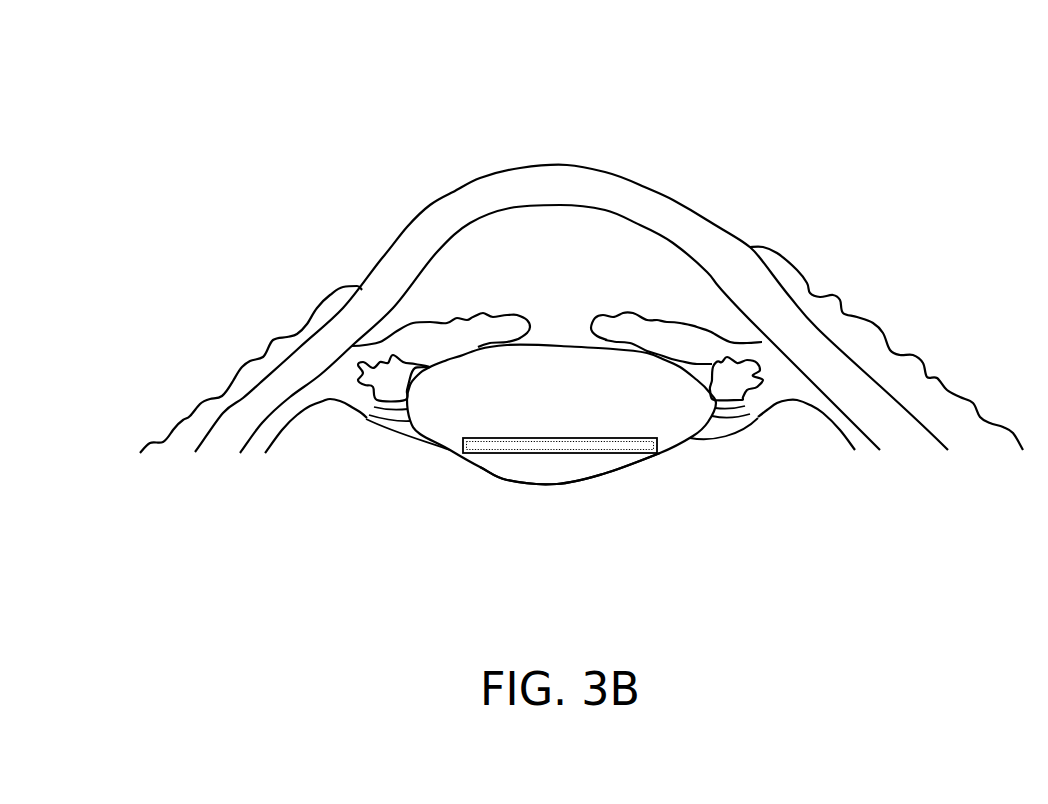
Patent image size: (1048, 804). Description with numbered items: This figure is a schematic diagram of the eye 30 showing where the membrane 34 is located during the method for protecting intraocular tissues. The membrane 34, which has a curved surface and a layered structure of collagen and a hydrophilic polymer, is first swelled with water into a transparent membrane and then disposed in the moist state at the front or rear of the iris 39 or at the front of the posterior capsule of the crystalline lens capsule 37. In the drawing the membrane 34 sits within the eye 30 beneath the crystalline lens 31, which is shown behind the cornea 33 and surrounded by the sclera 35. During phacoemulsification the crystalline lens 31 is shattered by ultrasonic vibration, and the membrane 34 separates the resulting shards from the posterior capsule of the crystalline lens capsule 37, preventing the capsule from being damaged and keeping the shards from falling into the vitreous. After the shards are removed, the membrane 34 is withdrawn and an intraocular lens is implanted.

The eye 30 is at (843, 80).
The crystalline lens 31 is at (561, 415).
The cornea 33 is at (477, 250).
The membrane 34 is at (610, 454).
The sclera 35 is at (397, 280).
The crystalline lens capsule 37 is at (512, 475).
The iris 39 is at (700, 345).